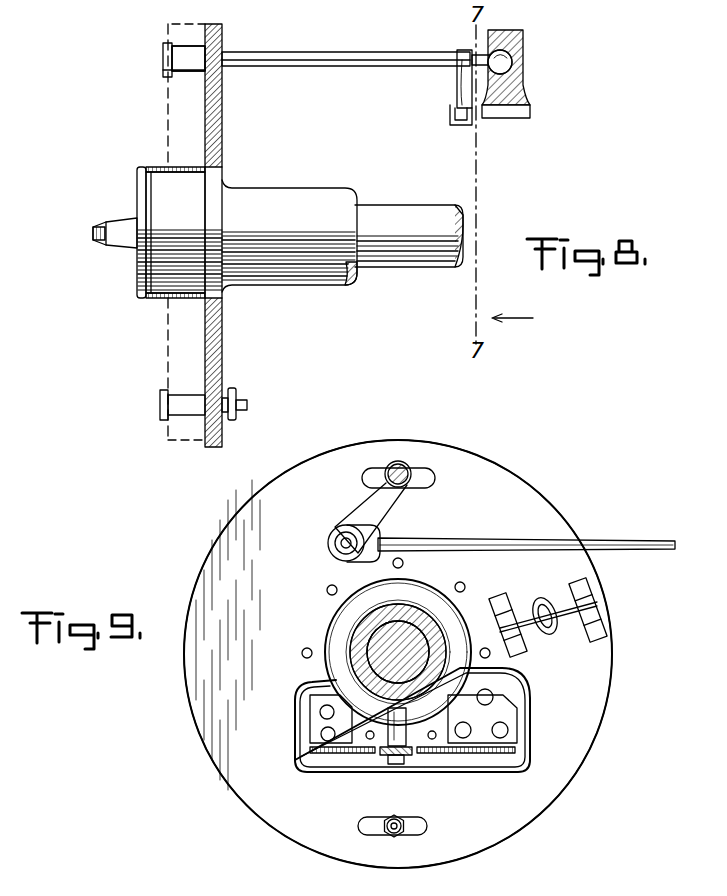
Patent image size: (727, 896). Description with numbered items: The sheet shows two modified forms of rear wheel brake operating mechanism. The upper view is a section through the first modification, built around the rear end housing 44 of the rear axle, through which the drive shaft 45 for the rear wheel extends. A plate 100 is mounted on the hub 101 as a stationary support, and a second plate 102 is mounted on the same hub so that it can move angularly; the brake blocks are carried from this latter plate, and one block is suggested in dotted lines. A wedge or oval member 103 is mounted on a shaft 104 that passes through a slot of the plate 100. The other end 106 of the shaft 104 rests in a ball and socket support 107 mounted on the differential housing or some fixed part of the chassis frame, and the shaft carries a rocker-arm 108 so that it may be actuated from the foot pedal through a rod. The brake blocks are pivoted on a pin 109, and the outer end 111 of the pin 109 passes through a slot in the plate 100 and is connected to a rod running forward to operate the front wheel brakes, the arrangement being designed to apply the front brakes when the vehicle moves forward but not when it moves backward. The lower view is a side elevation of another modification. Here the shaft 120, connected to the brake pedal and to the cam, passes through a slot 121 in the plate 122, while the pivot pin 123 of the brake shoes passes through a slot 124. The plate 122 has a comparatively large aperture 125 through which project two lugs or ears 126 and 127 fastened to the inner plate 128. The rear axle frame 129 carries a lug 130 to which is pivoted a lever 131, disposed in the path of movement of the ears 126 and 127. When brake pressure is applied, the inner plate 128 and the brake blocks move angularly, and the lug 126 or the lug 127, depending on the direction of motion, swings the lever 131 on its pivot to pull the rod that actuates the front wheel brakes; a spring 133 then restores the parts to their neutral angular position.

In FIG. 8, the rear end housing 44 is at (316, 197).
In FIG. 8, the drive shaft 45 is at (391, 215).
In FIG. 8, the plate 100 is at (223, 47).
In FIG. 8, the hub 101 is at (170, 193).
In FIG. 8, the plate 102 is at (221, 109).
In FIG. 8, the wedge or oval member 103 is at (187, 56).
In FIG. 8, the shaft 104 is at (322, 56).
In FIG. 8, the other end of the shaft 106 is at (523, 52).
In FIG. 8, the ball and socket support 107 is at (523, 78).
In FIG. 8, the rocker-arm 108 is at (462, 82).
In FIG. 8, the pin 109 is at (162, 406).
In FIG. 8, the outer end of the pin 111 is at (231, 398).
In FIG. 9, the shaft 120 is at (397, 464).
In FIG. 9, the slot 121 is at (425, 479).
In FIG. 9, the plate 122 is at (398, 654).
In FIG. 9, the pivot pin 123 is at (390, 832).
In FIG. 9, the slot 124 is at (428, 826).
In FIG. 9, the aperture 125 is at (532, 719).
In FIG. 9, the lug or ear 126 is at (322, 737).
In FIG. 9, the lug or ear 127 is at (482, 716).
In FIG. 9, the inner plate 128 is at (512, 690).
In FIG. 9, the rear axle frame 129 is at (356, 626).
In FIG. 9, the lug 130 is at (397, 724).
In FIG. 9, the lever 131 is at (410, 753).
In FIG. 9, the spring 133 is at (548, 608).